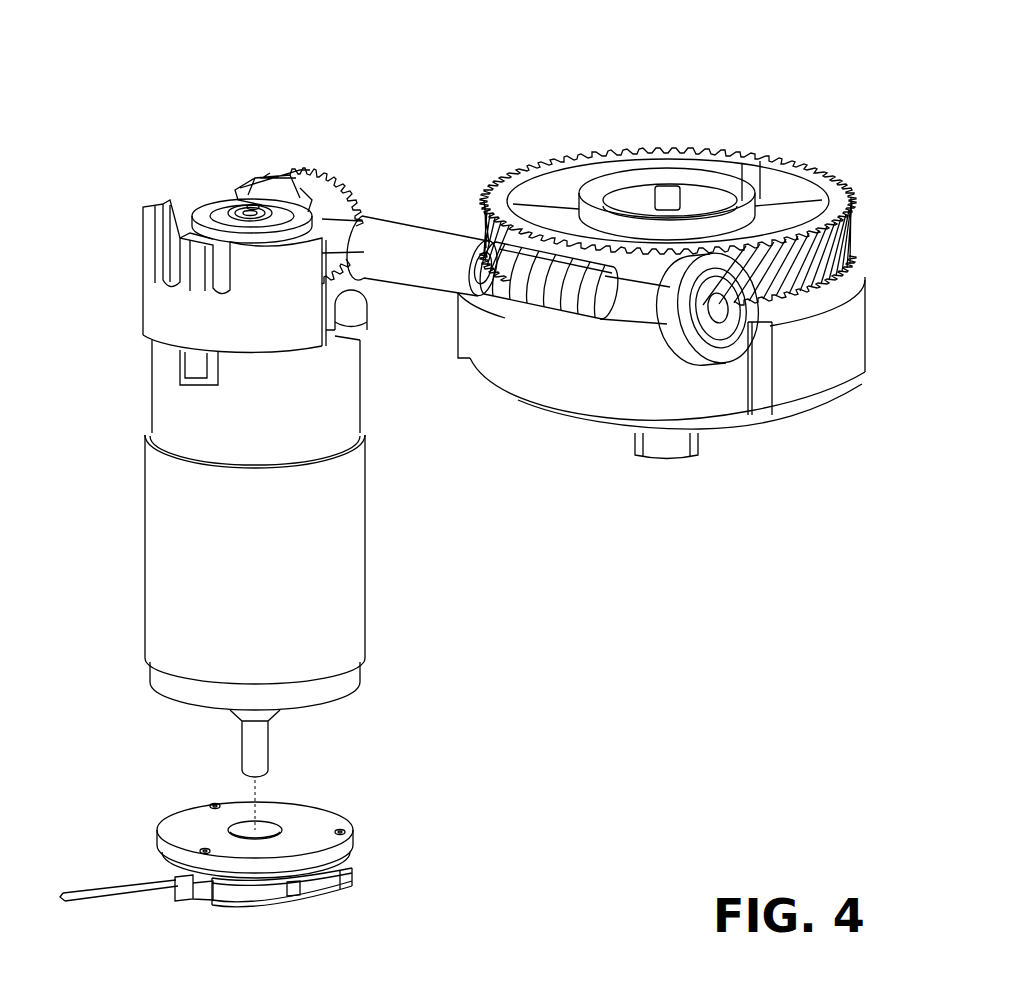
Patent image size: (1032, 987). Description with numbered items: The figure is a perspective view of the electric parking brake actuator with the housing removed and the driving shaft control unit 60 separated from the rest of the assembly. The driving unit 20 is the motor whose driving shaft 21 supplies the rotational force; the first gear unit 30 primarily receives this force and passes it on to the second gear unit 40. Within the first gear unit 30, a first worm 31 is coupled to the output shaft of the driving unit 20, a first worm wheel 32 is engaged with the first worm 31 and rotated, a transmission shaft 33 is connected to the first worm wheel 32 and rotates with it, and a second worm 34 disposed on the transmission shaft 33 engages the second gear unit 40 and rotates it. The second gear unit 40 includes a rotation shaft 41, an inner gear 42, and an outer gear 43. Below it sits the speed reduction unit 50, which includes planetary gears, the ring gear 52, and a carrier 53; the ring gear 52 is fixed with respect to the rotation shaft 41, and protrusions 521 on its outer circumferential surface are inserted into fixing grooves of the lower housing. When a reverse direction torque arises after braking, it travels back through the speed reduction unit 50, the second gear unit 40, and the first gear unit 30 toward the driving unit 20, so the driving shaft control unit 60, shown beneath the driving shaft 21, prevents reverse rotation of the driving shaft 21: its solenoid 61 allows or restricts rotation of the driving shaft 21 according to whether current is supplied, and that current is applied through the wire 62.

The driving unit 20 is at (330, 590).
The driving shaft 21 is at (253, 206).
The first gear unit 30 is at (411, 198).
The first worm 31 is at (230, 203).
The first worm wheel 32 is at (387, 231).
The transmission shaft 33 is at (287, 168).
The second worm 34 is at (527, 257).
The second gear unit 40 is at (668, 159).
The rotation shaft 41 is at (667, 188).
The inner gear 42 is at (697, 177).
The outer gear 43 is at (808, 160).
The speed reduction unit 50 is at (671, 406).
The ring gear 52 is at (603, 378).
The protrusion 521 is at (758, 403).
The carrier 53 is at (675, 446).
The driving shaft control unit 60 is at (283, 859).
The solenoid 61 is at (327, 898).
The wire 62 is at (110, 880).